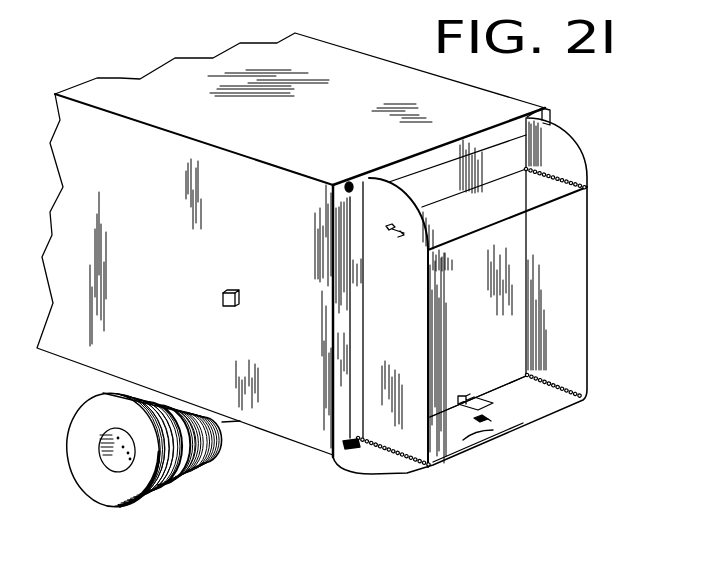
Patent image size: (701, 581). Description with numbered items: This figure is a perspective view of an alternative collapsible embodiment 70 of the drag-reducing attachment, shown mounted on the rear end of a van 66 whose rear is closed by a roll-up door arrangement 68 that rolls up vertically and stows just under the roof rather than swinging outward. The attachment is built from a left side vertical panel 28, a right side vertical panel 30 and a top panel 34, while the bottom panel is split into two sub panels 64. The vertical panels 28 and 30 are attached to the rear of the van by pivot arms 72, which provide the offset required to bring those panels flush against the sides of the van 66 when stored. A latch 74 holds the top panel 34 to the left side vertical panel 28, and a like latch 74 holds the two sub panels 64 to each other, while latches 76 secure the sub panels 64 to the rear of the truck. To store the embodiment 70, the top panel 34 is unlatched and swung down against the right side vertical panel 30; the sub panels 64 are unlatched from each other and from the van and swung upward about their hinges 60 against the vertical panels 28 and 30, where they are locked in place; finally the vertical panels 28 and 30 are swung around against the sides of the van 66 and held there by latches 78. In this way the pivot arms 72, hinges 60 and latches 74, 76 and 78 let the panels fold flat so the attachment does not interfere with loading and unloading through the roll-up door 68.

The van 66 is at (370, 47).
The alternative collapsible embodiment 70 is at (605, 183).
The left side vertical panel 28 is at (408, 320).
The right side vertical panel 30 is at (568, 293).
The top panel 34 is at (500, 217).
The roll-up rear door arrangement 68 is at (484, 320).
The sub panels 64 is at (561, 402).
The hinges 60 is at (583, 388).
The pivot arms 72 is at (528, 118).
The latch 74 is at (390, 224).
The latches 76 is at (472, 395).
The latches 78 is at (223, 304).